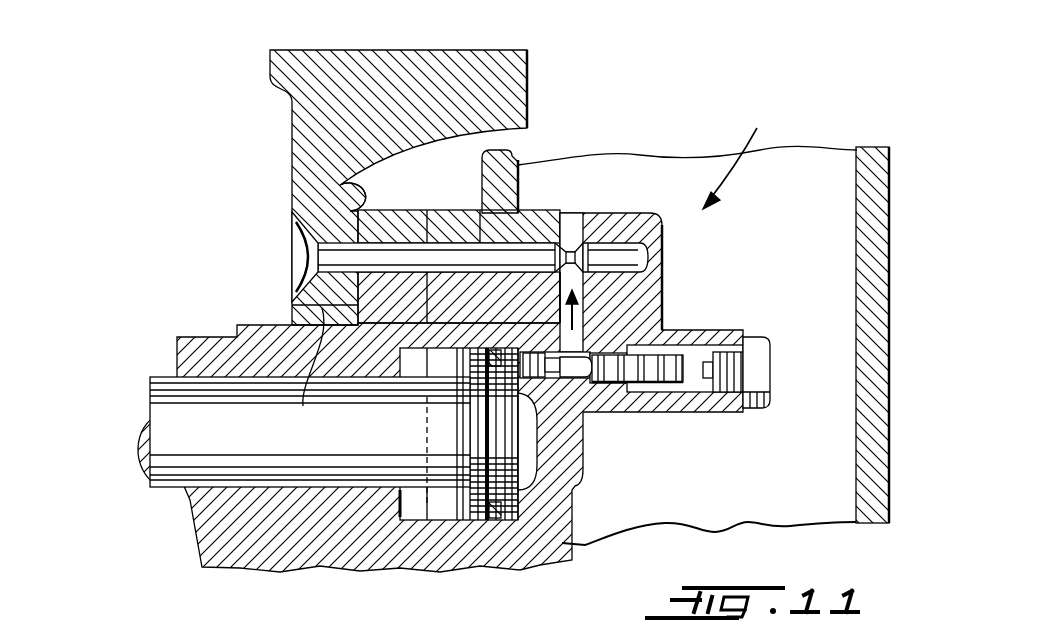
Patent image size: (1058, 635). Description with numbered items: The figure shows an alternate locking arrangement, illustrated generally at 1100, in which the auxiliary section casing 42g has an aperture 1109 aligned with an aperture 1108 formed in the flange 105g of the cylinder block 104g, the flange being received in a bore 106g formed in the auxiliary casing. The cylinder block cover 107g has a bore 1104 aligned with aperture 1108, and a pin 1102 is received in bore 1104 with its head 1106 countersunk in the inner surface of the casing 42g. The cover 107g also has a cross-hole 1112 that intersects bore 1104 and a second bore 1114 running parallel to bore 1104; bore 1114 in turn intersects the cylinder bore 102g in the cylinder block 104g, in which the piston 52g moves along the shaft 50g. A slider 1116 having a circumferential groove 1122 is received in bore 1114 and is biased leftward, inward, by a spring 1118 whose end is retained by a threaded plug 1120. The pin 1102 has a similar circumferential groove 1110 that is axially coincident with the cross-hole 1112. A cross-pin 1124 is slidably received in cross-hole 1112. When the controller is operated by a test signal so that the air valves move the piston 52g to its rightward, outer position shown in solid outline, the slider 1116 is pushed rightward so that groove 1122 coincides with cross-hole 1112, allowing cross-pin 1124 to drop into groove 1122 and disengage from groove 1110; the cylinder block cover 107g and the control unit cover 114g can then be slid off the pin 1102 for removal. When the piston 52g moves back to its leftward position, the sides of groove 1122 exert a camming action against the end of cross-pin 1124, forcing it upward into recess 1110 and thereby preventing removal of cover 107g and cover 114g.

The auxiliary section casing 42g is at (308, 50).
The flange 105g is at (337, 188).
The head 1106 is at (292, 238).
The aperture 1109 is at (296, 265).
The aperture 1108 is at (398, 248).
The pin 1102 is at (457, 240).
The cross-hole 1112 is at (571, 213).
The circumferential groove 1110 is at (586, 242).
The embodiment 1100 is at (687, 328).
The bore 1104 is at (662, 265).
The cylinder block cover 107g is at (662, 297).
The bore 1114 is at (606, 340).
The cross-pin 1124 is at (554, 292).
The threaded plug 1120 is at (770, 360).
The slider 1116 is at (606, 388).
The spring 1118 is at (690, 390).
The circumferential groove 1122 is at (583, 413).
The bore 106g is at (304, 369).
The shaft 50g is at (270, 450).
The cylinder block 104g is at (313, 578).
The cylinder bore 102g is at (413, 520).
The piston 52g is at (460, 512).
The control unit cover 114g is at (888, 500).